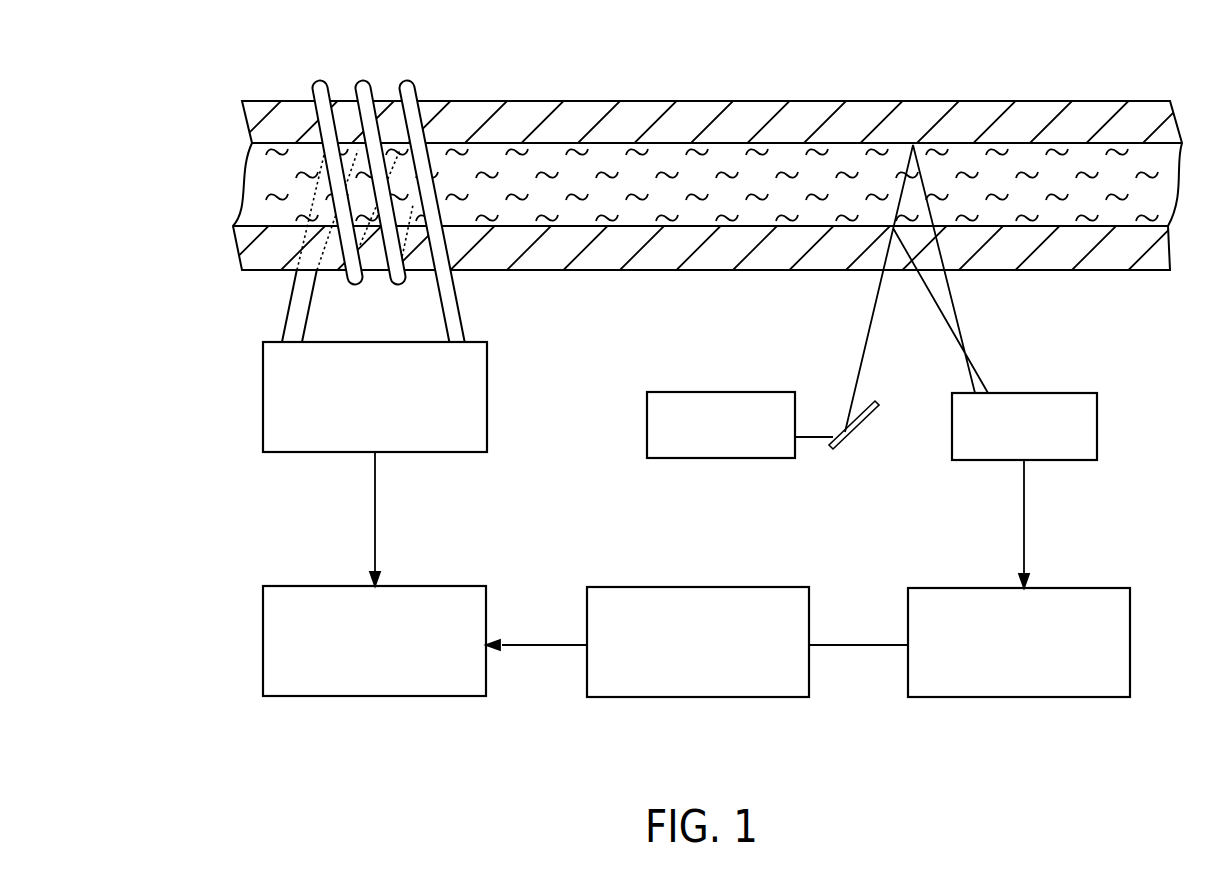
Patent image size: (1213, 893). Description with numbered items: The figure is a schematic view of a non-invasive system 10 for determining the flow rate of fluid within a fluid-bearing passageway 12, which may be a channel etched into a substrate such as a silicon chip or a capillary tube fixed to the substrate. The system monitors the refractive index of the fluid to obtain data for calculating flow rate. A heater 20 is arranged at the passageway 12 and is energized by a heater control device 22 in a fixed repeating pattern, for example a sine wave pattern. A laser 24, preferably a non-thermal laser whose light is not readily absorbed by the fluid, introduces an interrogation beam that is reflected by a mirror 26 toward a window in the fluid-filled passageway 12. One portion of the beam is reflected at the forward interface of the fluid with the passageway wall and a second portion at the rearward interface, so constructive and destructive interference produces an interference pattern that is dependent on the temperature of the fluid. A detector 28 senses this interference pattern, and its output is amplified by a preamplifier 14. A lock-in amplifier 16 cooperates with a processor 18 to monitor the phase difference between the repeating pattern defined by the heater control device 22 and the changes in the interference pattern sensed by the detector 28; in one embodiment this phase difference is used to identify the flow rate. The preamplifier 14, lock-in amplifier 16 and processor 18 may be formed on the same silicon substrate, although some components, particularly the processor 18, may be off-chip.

The non-invasive system 10 is at (957, 43).
The fluid-bearing passageway 12 is at (723, 155).
The preamplifier 14 is at (1130, 638).
The lock-in amplifier 16 is at (627, 688).
The processor 18 is at (290, 688).
The heater 20 is at (297, 303).
The heater control device 22 is at (487, 380).
The laser 24 is at (758, 452).
The mirror 26 is at (843, 447).
The detector 28 is at (1097, 420).